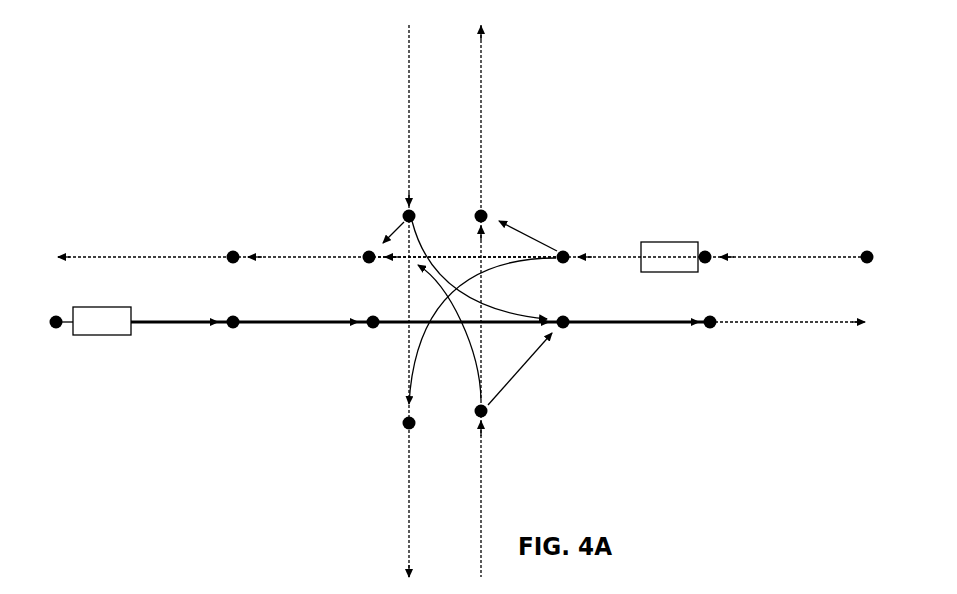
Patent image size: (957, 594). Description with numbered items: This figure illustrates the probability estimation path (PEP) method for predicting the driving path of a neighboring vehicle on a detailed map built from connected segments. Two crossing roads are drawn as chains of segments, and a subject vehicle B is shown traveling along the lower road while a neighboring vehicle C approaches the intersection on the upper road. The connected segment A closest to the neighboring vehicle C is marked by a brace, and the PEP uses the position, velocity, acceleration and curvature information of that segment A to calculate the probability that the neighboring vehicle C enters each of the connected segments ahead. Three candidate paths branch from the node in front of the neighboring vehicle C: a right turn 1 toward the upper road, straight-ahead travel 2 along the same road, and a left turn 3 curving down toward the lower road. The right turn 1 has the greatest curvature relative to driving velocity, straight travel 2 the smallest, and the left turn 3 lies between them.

The right turn 1 is at (528, 231).
The straight-ahead travel 2 is at (466, 247).
The left turn 3 is at (482, 331).
The segment A is at (706, 243).
The subject vehicle B is at (100, 335).
The neighboring vehicle C is at (698, 268).